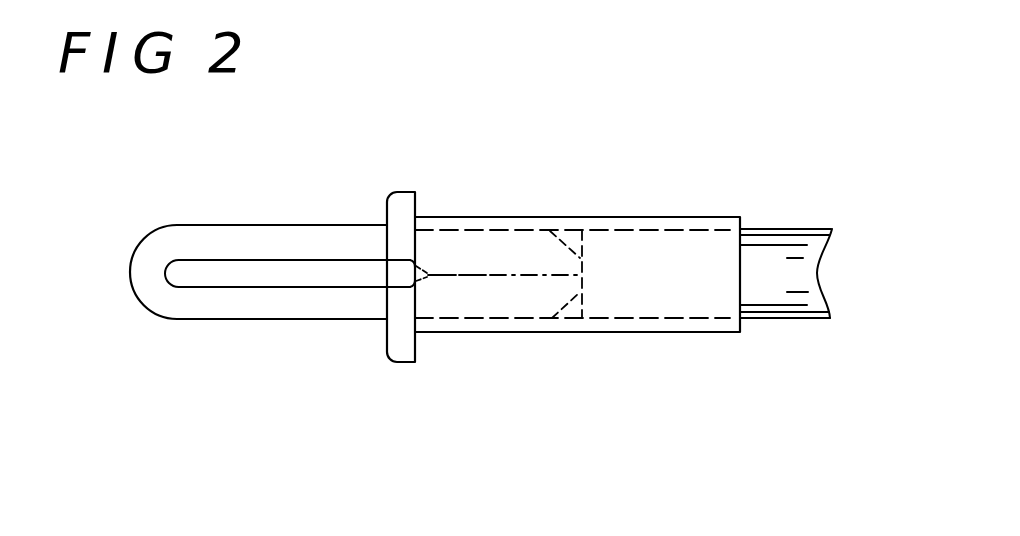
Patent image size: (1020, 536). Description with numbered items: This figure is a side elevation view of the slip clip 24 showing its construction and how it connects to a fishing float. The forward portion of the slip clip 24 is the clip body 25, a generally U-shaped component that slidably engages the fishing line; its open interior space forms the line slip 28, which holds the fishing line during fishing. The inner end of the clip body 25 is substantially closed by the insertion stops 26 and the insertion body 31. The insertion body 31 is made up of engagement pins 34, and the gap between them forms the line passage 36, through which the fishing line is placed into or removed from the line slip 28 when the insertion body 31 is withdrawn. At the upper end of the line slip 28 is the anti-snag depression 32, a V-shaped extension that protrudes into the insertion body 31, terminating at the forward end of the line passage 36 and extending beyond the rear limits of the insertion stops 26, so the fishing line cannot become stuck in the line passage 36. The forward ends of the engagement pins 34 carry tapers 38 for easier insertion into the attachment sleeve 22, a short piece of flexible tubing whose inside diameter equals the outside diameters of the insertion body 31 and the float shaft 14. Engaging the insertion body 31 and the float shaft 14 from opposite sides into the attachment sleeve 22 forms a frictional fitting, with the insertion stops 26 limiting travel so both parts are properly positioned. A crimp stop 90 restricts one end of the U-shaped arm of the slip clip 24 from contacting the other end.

The float shaft 14 is at (786, 222).
The attachment sleeve 22 is at (633, 208).
The slip clip 24 is at (480, 162).
The clip body 25 is at (127, 218).
The insertion stops 26 is at (396, 193).
The line slip 28 is at (182, 280).
The insertion body 31 is at (521, 228).
The anti-snag depression 32 is at (410, 268).
The engagement pins 34 is at (445, 260).
The line passage 36 is at (513, 277).
The tapers 38 is at (570, 307).
The crimp stop 90 is at (479, 268).